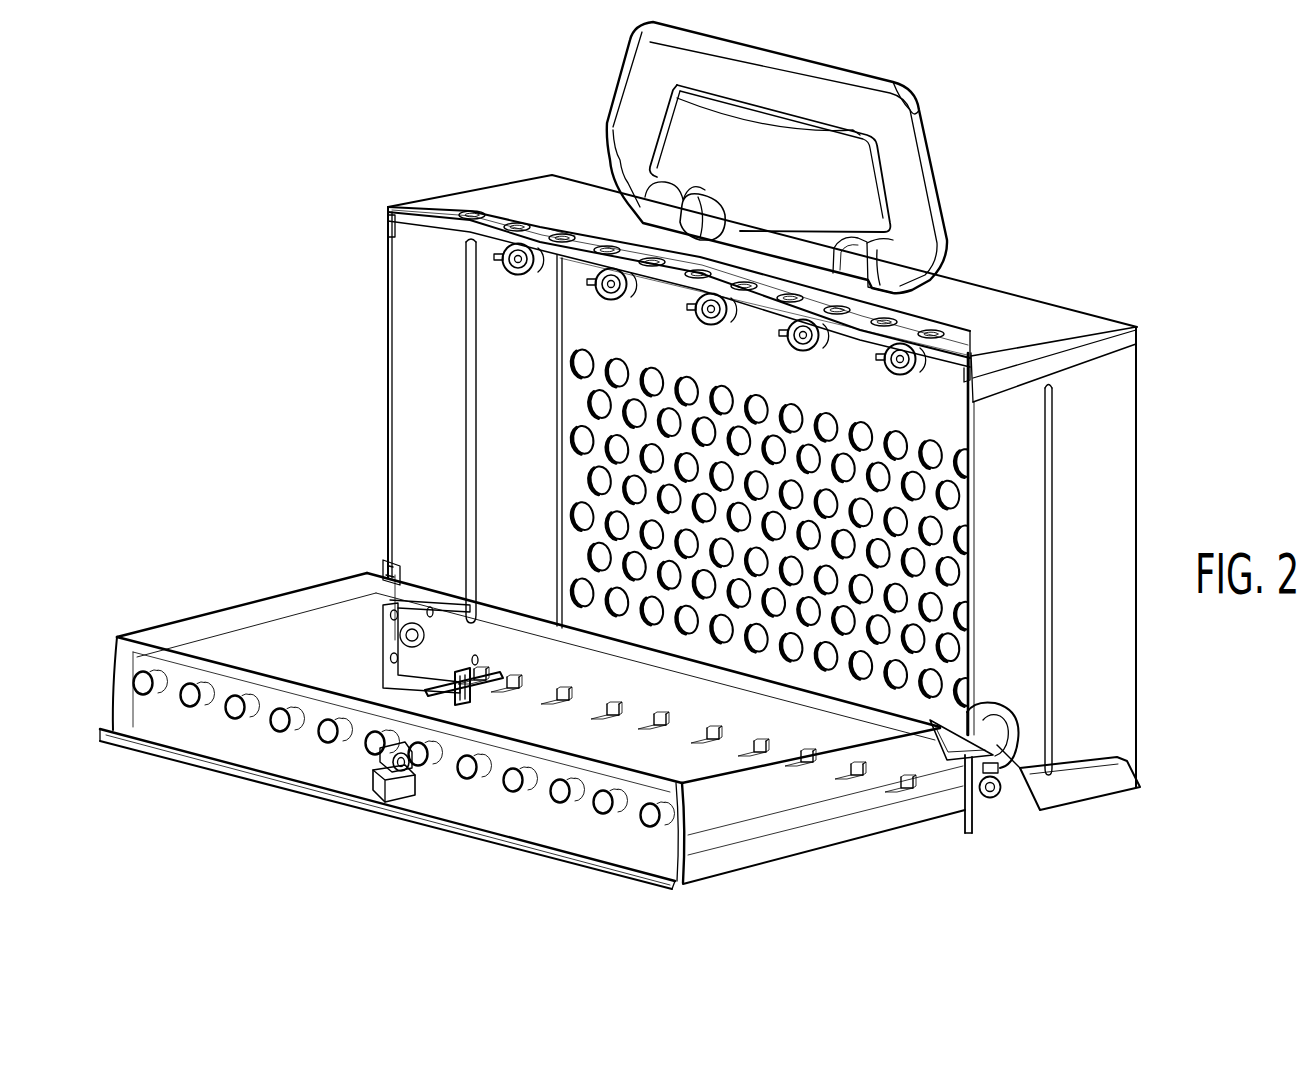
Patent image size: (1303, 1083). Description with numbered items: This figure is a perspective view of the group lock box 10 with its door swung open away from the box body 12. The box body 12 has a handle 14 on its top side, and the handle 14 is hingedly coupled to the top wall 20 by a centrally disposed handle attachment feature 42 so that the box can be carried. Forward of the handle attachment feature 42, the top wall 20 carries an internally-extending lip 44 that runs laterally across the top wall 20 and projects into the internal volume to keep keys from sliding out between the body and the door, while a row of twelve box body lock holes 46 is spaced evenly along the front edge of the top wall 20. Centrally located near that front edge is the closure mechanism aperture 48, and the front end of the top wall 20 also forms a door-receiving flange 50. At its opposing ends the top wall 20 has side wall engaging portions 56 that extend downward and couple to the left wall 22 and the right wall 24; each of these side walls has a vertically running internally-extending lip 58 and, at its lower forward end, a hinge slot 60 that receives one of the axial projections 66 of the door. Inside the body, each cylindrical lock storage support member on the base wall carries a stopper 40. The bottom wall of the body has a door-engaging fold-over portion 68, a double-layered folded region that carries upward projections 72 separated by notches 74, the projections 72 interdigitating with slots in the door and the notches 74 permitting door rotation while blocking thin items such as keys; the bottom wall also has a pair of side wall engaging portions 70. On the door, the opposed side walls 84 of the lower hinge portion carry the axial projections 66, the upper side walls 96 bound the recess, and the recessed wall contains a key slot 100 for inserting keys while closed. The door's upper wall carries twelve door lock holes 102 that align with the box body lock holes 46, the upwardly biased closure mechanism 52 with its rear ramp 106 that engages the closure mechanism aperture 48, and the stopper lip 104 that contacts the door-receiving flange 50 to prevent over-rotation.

The group lock box 10 is at (390, 95).
The box body 12 is at (1088, 300).
The handle 14 is at (797, 157).
The top wall 20 is at (973, 297).
The left wall 22 is at (417, 490).
The right wall 24 is at (1120, 508).
The stopper 40 is at (697, 318).
The handle attachment feature 42 is at (698, 210).
The internally-extending lip 44 is at (553, 231).
The box body lock holes 46 is at (512, 219).
The closure mechanism aperture 48 is at (747, 268).
The door-receiving flange 50 is at (645, 220).
The closure mechanism 52 is at (390, 784).
The side wall engaging portions 56 is at (1105, 360).
The internally-extending lip 58 is at (468, 370).
The hinge slot 60 is at (1040, 767).
The axial projections 66 is at (997, 798).
The door-engaging fold-over portion 68 is at (547, 745).
The side wall engaging portions 70 is at (1107, 787).
The projections 72 is at (767, 737).
The notches 74 is at (633, 727).
The opposed side walls 84 is at (972, 800).
The upper side walls 96 is at (850, 827).
The key slot 100 is at (460, 660).
The door lock holes 102 is at (183, 703).
The stopper lip 104 is at (490, 833).
The ramp 106 is at (383, 757).